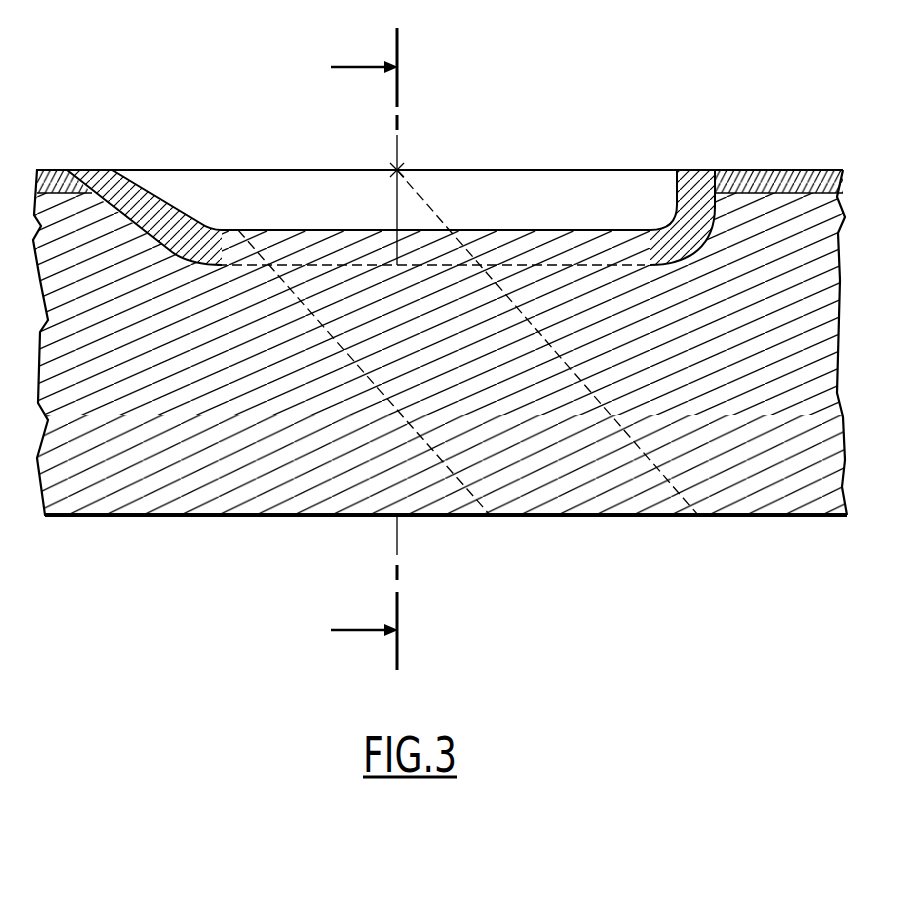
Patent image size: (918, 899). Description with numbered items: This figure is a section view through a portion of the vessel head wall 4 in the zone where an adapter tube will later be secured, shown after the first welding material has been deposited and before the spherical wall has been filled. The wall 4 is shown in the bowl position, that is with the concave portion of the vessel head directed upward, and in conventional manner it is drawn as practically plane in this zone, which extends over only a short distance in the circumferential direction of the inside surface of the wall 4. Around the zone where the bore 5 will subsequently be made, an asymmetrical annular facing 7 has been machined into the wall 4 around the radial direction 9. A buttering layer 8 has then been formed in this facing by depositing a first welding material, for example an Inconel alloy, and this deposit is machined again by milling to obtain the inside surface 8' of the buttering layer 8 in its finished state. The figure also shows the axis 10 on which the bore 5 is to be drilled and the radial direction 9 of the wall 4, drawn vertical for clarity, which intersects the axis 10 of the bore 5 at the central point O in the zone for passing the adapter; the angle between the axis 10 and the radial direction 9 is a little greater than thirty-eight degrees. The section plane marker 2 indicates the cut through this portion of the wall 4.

The section line of FIG. 2 is at (364, 353).
The central point O is at (397, 170).
The vessel head wall 4 is at (232, 497).
The bore 5 is at (813, 420).
The annular facing 7 is at (77, 168).
The buttering layer 8 is at (390, 193).
The inside surface of the buttering layer 8' is at (394, 183).
The radial direction 9 is at (398, 542).
The axis 10 is at (673, 487).